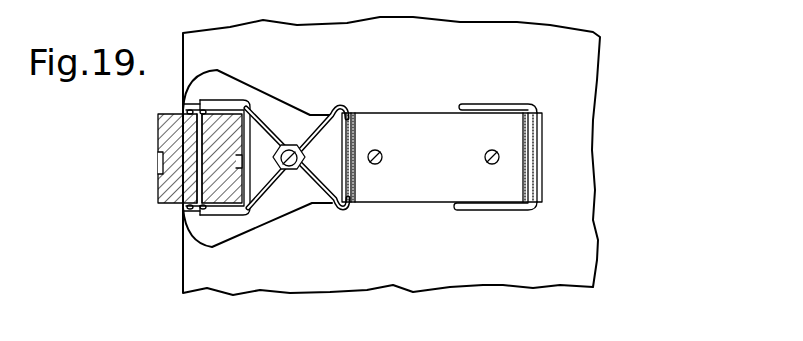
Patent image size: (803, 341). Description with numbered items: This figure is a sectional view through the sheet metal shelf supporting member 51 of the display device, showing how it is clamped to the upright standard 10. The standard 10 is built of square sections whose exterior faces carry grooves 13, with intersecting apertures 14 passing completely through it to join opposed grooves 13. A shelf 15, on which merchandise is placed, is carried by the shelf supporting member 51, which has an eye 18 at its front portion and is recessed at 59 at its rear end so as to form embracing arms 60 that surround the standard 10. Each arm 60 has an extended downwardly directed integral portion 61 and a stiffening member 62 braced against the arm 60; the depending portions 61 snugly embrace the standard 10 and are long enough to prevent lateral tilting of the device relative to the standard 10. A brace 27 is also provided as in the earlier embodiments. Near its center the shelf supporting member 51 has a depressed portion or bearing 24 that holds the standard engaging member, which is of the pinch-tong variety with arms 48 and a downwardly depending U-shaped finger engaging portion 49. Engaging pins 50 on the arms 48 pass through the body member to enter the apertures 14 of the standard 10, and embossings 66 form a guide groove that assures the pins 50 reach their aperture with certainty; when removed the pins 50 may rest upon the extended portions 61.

The standard 10 is at (160, 186).
The groove 13 is at (158, 162).
The aperture 14 is at (160, 172).
The shelf 15 is at (530, 272).
The eye 18 is at (528, 173).
The depressed portion or bearing 24 is at (350, 188).
The brace 27 is at (503, 106).
The arms 48 is at (258, 135).
The U-shaped finger engaging portion 49 is at (290, 145).
The engaging pins 50 is at (196, 118).
The shelf supporting member 51 is at (412, 127).
The recess 59 is at (246, 122).
The embracing arms 60 is at (183, 92).
The extended downwardly directed integral portion 61 is at (226, 113).
The stiffening member 62 is at (183, 108).
The embossings 66 is at (203, 215).